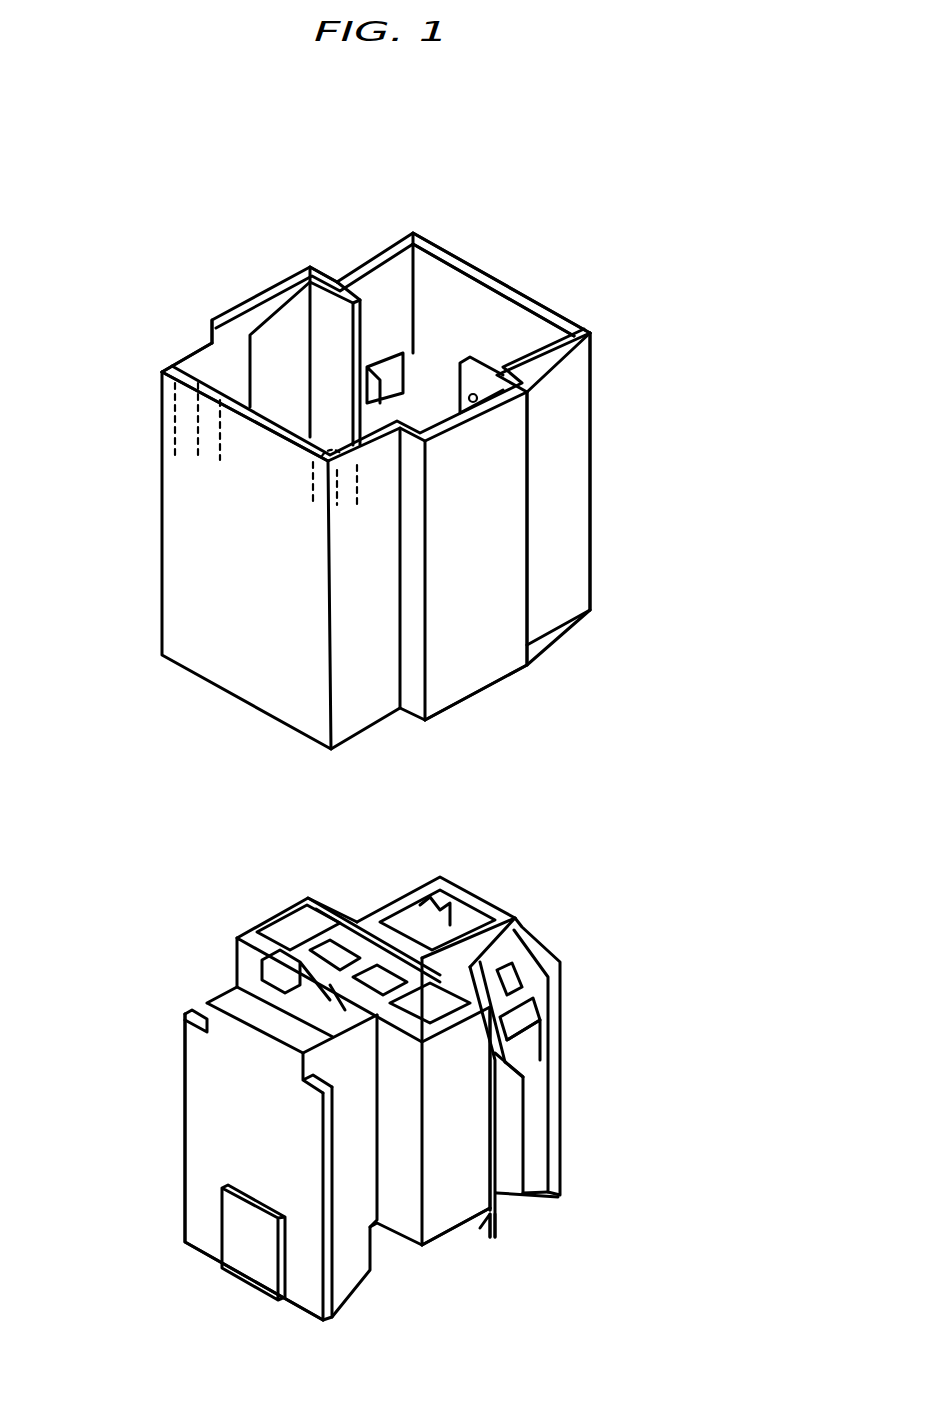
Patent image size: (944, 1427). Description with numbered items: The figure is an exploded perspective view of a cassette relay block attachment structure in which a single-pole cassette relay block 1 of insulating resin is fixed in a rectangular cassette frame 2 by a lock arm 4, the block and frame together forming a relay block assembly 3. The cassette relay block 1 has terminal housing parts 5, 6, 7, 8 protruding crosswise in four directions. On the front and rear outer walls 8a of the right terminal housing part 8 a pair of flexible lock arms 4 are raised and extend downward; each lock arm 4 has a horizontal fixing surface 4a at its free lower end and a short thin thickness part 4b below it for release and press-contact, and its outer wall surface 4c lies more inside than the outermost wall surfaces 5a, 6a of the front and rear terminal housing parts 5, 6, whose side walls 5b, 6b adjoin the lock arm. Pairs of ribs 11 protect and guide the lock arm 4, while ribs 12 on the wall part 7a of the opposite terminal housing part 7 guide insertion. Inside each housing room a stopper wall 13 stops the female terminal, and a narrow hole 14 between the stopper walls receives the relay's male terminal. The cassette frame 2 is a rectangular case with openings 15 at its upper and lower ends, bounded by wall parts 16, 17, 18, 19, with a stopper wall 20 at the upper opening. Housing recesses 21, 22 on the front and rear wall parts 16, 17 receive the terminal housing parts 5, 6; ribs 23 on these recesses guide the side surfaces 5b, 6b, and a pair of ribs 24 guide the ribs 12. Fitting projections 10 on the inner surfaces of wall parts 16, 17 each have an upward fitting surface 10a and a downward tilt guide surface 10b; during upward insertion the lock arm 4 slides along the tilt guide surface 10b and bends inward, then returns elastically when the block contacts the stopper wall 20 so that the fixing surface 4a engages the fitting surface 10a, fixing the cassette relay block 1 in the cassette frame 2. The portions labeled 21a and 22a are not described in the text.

The cassette relay block 1 is at (592, 1093).
The cassette frame 2 is at (605, 536).
The relay block assembly 3 is at (682, 180).
The lock arm 4 is at (548, 1000).
The fixing surface 4a is at (510, 1064).
The thin thickness part 4b is at (510, 1069).
The outer wall surface of lock arm 4c is at (530, 1031).
The terminal housing part 5 is at (243, 952).
The outer wall surface 5a is at (270, 916).
The side wall 5b is at (327, 913).
The terminal housing part 6 is at (443, 1241).
The outer wall surface 6a is at (493, 1191).
The side wall 6b is at (457, 1171).
The terminal housing part 7 is at (230, 980).
The wall part 7a is at (232, 1118).
The terminal housing part 8 is at (518, 924).
The outer wall 8a is at (513, 1133).
The fitting projection 10 is at (398, 358).
The fitting surface 10a is at (382, 348).
The tilt guide surface 10b is at (508, 321).
The rib 11 is at (563, 993).
The rib 12 is at (185, 1050).
The stopper wall 13 is at (448, 893).
The narrow hole 14 is at (500, 906).
The opening 15 is at (548, 297).
The wall part 16 is at (393, 243).
The wall part 17 is at (553, 417).
The wall part 18 is at (178, 477).
The wall part 19 is at (577, 318).
The stopper wall 20 is at (200, 376).
The housing recess 21 is at (285, 316).
The rib notch 21a is at (253, 301).
The housing recess 22 is at (500, 405).
The lock panel 22a is at (502, 575).
The rib 23 is at (345, 293).
The rib 24 is at (210, 334).